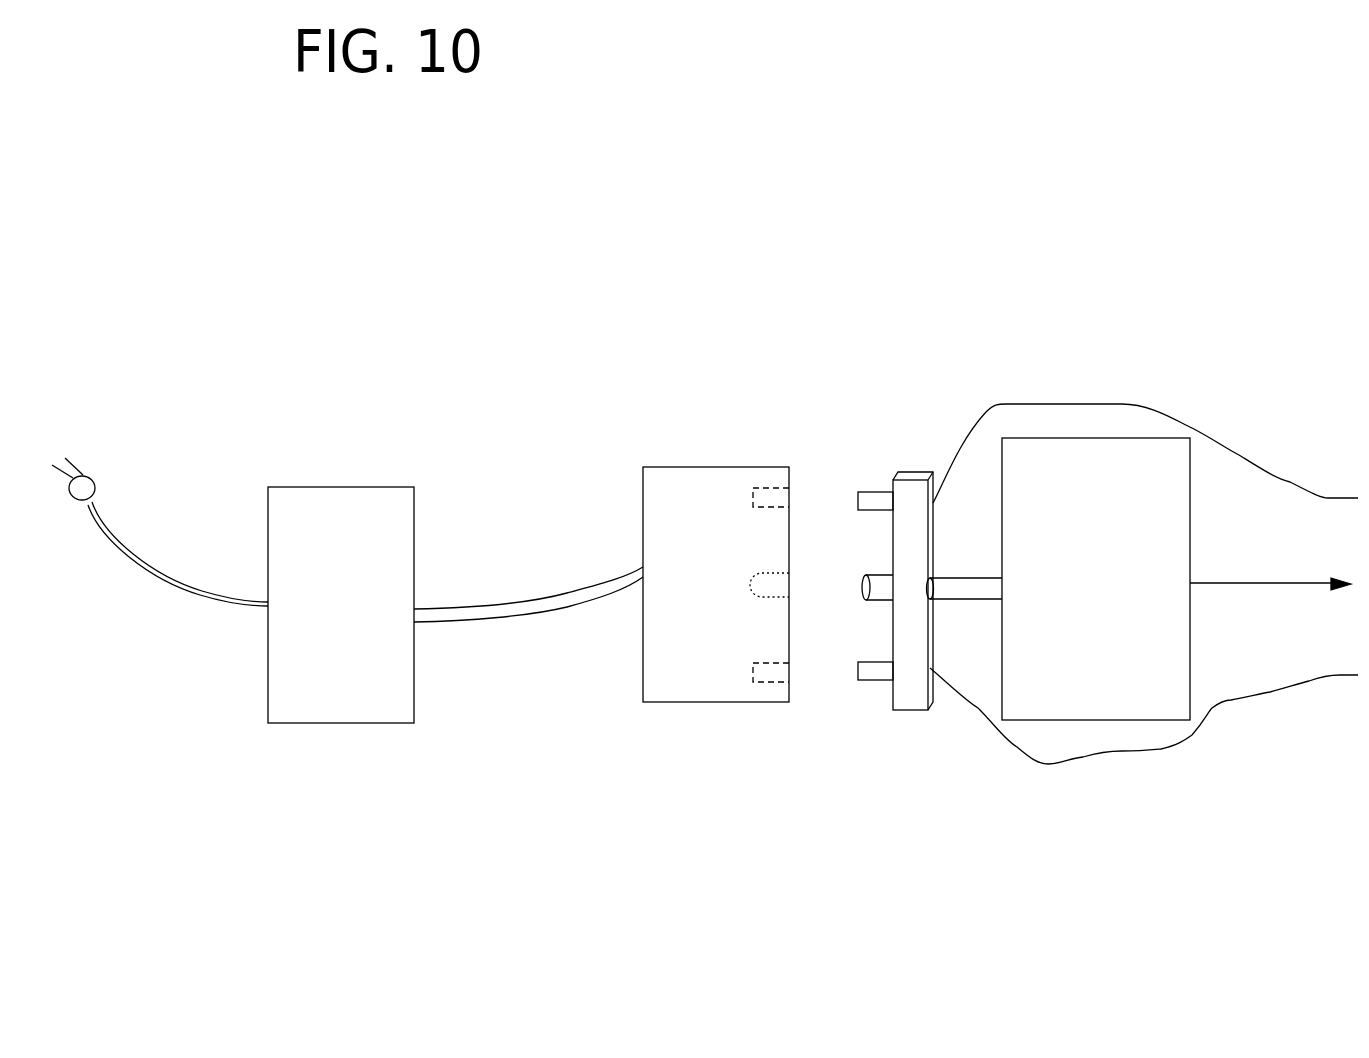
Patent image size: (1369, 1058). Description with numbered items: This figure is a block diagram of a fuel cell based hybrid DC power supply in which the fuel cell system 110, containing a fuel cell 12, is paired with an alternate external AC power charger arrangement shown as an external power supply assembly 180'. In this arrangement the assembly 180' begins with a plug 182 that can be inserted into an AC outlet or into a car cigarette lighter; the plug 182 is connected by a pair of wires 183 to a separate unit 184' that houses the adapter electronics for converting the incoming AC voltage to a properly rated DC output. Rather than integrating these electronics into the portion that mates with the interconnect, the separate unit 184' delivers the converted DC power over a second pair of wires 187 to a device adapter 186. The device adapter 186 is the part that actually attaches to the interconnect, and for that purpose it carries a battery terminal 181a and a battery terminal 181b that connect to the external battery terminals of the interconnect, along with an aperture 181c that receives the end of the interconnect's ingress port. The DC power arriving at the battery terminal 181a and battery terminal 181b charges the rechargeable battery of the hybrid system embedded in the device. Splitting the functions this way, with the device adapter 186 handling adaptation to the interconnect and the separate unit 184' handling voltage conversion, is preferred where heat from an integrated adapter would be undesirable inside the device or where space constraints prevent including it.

The plug 182 is at (75, 475).
The pair of wires 183 is at (172, 595).
The separate unit 184' is at (341, 562).
The second pair of wires 187 is at (603, 590).
The device adapter 186 is at (803, 580).
The battery terminal 181a is at (773, 490).
The battery terminal 181b is at (789, 583).
The aperture 181c is at (772, 682).
The fuel cell system 110 is at (1126, 368).
The fuel cell 12 is at (1139, 579).
The external power supply assembly 180' is at (238, 860).